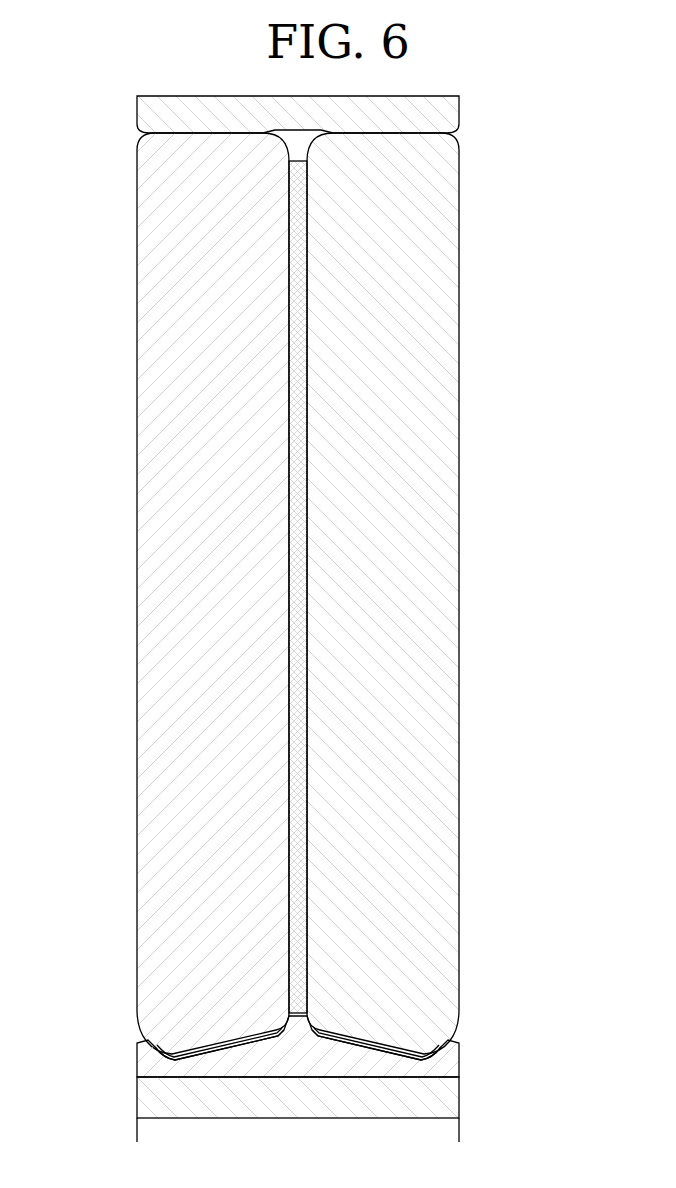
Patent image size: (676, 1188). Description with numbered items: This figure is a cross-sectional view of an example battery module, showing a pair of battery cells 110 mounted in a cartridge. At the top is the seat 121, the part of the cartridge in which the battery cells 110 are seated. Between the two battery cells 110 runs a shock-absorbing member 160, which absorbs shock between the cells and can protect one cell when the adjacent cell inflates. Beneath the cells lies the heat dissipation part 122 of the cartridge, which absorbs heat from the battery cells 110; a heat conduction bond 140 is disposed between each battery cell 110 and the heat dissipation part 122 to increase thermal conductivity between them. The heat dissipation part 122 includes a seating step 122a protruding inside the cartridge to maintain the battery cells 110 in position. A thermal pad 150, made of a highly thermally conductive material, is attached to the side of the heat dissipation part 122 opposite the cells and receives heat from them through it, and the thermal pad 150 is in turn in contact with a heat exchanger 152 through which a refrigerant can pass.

The seat 121 is at (449, 113).
The battery cell 110 is at (172, 434).
The shock-absorbing member 160 is at (298, 607).
The heat conduction bond 140 is at (387, 1045).
The heat dissipation part 122 is at (449, 1062).
The seating step 122a is at (297, 1018).
The thermal pad 150 is at (450, 1097).
The heat exchanger 152 is at (450, 1132).